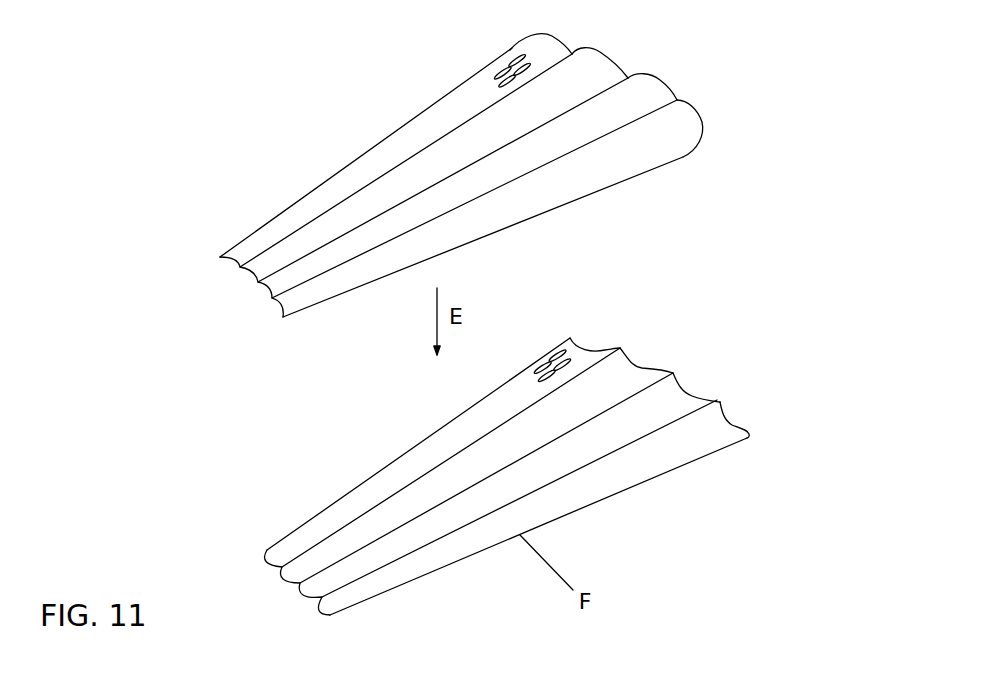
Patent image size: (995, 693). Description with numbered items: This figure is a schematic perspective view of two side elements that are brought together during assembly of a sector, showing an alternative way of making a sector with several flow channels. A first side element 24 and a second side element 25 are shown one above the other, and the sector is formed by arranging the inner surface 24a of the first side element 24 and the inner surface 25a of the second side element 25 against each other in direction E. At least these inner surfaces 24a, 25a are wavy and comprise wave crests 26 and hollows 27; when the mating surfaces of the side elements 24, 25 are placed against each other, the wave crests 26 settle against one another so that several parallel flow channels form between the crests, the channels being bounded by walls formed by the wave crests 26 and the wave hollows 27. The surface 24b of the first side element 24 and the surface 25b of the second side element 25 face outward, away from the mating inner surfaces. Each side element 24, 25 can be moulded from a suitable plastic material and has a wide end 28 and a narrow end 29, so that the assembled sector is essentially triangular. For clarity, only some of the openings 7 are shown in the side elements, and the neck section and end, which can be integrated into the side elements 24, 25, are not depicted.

The first side element 24 is at (381, 182).
The inner surface of first side element 24a is at (255, 287).
The upper strip 24b is at (396, 157).
The second side element 25 is at (426, 476).
The inner surface of second side element 25a is at (393, 512).
The lower strip portion 25b is at (288, 593).
The wave crests 26 is at (572, 53).
The wave hollows 27 is at (597, 67).
The wide end 28 is at (443, 50).
The narrow end 29 is at (215, 223).
The openings 7 is at (508, 63).